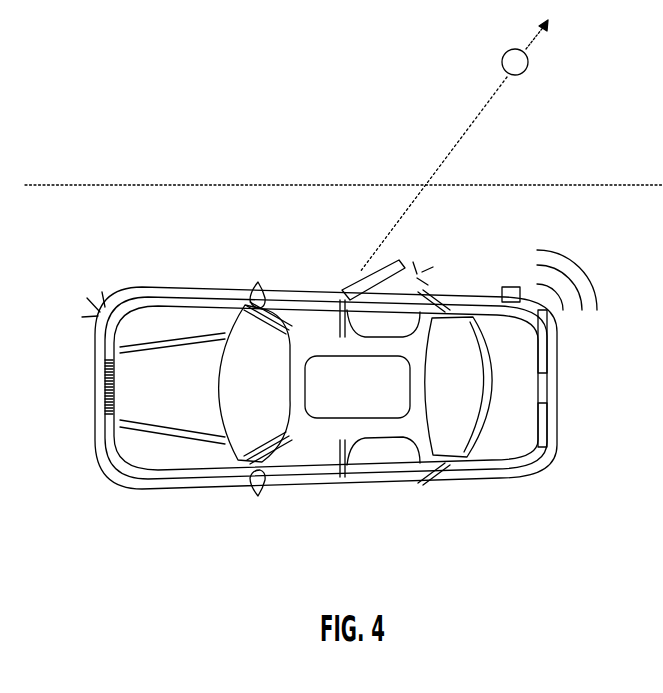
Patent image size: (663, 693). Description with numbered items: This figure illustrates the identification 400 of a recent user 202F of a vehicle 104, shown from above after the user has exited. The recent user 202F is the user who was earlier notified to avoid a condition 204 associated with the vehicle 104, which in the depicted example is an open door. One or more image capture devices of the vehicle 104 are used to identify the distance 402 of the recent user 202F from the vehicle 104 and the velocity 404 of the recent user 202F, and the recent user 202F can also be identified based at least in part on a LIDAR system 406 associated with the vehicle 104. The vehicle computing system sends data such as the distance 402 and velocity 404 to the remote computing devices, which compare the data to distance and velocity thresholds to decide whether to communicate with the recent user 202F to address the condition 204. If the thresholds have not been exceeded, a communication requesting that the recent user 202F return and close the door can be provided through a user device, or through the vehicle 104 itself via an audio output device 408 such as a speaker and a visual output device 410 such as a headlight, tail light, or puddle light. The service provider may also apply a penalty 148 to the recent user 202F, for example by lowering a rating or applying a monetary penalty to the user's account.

The identification 400 is at (84, 110).
The recent user 202F is at (501, 58).
The velocity 404 is at (532, 53).
The penalty 148 is at (528, 103).
The distance 402 is at (440, 163).
The vehicle 104 is at (563, 425).
The condition 204 is at (337, 259).
The LIDAR system 406 is at (367, 402).
The audio output device 408 is at (510, 287).
The visual output device 410 is at (130, 305).